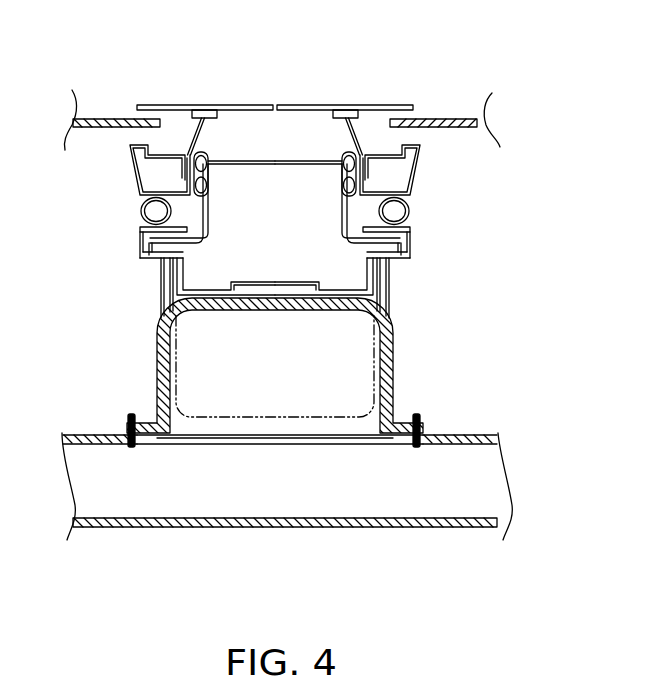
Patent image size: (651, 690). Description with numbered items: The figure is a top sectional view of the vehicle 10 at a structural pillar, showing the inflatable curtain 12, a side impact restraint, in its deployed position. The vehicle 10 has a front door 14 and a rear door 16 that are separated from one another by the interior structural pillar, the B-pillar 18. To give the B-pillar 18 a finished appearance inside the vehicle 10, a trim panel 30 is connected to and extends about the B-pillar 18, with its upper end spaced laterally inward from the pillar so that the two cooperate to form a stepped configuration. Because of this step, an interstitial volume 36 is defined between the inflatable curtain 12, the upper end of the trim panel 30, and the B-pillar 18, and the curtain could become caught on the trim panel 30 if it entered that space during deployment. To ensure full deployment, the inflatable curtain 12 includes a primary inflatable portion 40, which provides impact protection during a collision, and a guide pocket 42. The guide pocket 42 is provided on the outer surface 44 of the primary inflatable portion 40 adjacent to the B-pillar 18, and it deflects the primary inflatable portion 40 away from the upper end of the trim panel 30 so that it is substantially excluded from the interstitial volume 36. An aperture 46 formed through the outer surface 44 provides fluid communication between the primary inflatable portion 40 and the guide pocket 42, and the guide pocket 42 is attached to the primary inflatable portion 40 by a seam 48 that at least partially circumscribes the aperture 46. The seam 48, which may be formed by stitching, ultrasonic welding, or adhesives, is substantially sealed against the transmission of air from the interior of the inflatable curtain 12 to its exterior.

The vehicle 10 is at (433, 53).
The inflatable curtain 12 is at (369, 541).
The front door 14 is at (170, 105).
The rear door 16 is at (377, 105).
The B-pillar 18 is at (173, 279).
The trim panel 30 is at (388, 290).
The interstitial volume 36 is at (197, 345).
The primary inflatable portion 40 is at (250, 528).
The guide pocket 42 is at (390, 345).
The outer surface 44 is at (492, 432).
The aperture 46 is at (216, 445).
The seam 48 is at (128, 420).